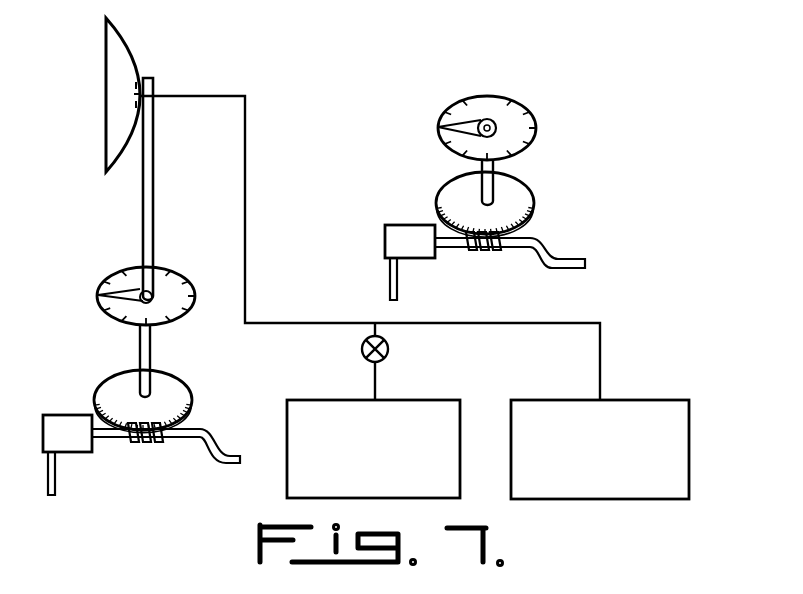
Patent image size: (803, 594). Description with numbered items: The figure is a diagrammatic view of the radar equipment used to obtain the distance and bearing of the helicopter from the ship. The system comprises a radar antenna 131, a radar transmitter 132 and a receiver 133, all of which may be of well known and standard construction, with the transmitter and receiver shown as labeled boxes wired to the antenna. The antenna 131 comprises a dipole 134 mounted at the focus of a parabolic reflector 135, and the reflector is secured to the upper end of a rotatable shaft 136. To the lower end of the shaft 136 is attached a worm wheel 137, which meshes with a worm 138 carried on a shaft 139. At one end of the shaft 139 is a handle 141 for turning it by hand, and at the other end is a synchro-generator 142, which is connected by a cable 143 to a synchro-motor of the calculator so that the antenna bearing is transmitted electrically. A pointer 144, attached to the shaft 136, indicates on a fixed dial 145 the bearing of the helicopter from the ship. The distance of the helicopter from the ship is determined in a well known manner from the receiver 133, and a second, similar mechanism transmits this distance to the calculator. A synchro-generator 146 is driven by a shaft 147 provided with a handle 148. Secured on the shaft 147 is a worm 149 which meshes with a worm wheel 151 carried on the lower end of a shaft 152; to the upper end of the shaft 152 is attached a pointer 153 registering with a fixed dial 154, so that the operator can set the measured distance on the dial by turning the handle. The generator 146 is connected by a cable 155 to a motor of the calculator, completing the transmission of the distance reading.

The radar antenna 131 is at (90, 107).
The radar transmitter 132 is at (668, 412).
The receiver 133 is at (448, 404).
The dipole 134 is at (136, 96).
The parabolic reflector 135 is at (126, 52).
The rotatable shaft 136 is at (151, 164).
The worm wheel 137 is at (172, 386).
The worm 138 is at (143, 443).
The shaft 139 is at (183, 438).
The handle 141 is at (227, 463).
The synchro-generator 142 is at (65, 420).
The cable 143 is at (48, 463).
The pointer 144 is at (120, 290).
The fixed dial 145 is at (193, 288).
The synchro-generator 146 is at (397, 242).
The shaft 147 is at (525, 247).
The handle 148 is at (565, 258).
The worm 149 is at (480, 250).
The worm wheel 151 is at (522, 203).
The shaft 152 is at (480, 170).
The pointer 153 is at (470, 121).
The fixed dial 154 is at (532, 112).
The cable 155 is at (390, 275).